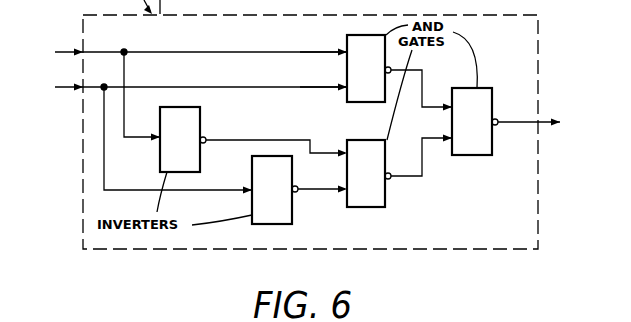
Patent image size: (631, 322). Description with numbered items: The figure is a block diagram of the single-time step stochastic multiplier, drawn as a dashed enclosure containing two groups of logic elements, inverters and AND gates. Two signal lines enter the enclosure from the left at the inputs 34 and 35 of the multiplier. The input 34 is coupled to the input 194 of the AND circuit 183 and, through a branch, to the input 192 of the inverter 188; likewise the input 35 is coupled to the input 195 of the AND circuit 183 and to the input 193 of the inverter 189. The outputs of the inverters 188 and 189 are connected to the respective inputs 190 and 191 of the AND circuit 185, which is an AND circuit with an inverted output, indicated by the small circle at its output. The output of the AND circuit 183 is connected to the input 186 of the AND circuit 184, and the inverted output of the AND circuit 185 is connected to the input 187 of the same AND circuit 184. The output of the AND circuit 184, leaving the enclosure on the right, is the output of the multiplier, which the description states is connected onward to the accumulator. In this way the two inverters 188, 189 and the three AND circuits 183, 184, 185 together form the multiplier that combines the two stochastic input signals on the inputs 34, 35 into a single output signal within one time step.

The input of the multiplier 34 is at (81, 50).
The input of the multiplier 35 is at (80, 88).
The AND circuit 183 is at (369, 68).
The AND circuit 184 is at (506, 121).
The AND circuit with an inverted output 185 is at (369, 173).
The input of the AND circuit 186 is at (452, 103).
The input of the AND circuit 187 is at (446, 147).
The inverter 188 is at (183, 139).
The inverter 189 is at (275, 190).
The input of the AND circuit 190 is at (345, 151).
The input of the AND circuit 191 is at (343, 194).
The input of the inverter 192 is at (158, 133).
The input of the inverter 193 is at (252, 178).
The input of the AND circuit 194 is at (345, 50).
The input of the AND circuit 195 is at (345, 85).